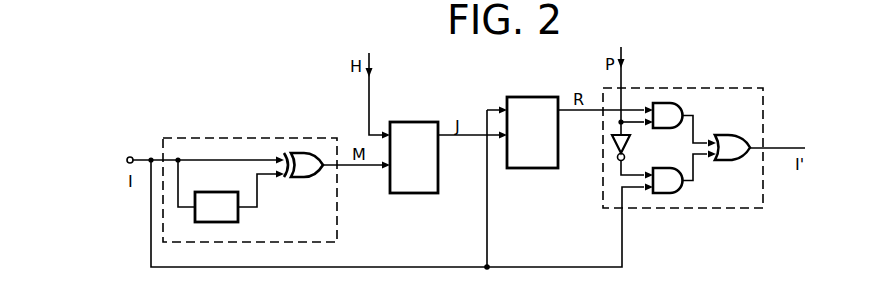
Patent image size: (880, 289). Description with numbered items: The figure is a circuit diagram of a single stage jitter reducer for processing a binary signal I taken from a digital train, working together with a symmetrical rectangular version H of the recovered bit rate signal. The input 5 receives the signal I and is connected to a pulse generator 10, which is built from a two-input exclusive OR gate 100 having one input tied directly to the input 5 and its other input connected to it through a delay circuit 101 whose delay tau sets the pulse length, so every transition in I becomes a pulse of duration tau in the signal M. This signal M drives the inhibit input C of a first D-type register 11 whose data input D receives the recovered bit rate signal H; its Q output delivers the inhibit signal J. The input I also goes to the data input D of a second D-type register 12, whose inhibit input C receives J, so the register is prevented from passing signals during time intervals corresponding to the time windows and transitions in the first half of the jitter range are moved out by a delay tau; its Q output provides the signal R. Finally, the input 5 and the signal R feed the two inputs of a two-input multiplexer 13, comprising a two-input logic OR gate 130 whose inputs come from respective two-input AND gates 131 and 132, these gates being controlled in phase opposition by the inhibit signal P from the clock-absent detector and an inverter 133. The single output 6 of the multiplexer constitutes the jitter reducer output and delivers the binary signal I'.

The input 5 is at (132, 156).
The pulse generator 10 is at (238, 138).
The two-input exclusive OR gate 100 is at (300, 178).
The delay circuit 101 is at (238, 213).
The first D-type register 11 is at (413, 130).
The second D-type register 12 is at (534, 105).
The two-input multiplexer 13 is at (717, 88).
The two-input logic OR gate 130 is at (738, 147).
The two-input AND gate 131 is at (667, 110).
The two-input AND gate 132 is at (668, 183).
The inverter 133 is at (612, 145).
The output 6 is at (789, 147).